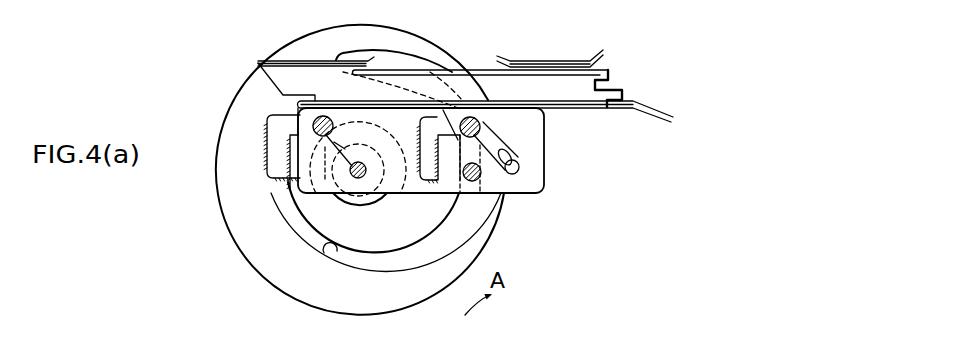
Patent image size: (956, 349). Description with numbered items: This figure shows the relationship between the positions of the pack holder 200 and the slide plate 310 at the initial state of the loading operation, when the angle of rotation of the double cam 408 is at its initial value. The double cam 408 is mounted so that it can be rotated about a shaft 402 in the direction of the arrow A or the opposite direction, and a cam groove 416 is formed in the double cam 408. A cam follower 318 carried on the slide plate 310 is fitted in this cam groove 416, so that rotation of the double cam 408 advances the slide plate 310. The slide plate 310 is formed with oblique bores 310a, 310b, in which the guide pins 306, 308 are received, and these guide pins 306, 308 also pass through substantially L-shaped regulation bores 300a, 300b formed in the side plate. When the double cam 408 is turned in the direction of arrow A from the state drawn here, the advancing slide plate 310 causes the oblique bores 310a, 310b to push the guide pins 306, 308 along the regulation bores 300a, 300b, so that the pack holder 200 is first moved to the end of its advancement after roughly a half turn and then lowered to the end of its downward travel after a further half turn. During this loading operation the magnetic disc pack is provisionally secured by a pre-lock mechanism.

The pack holder 200 is at (553, 61).
The guide pin 306 is at (302, 116).
The guide pin 308 is at (480, 126).
The slide plate 310 is at (543, 142).
The oblique bore 310a is at (333, 145).
The oblique bore 310b is at (520, 170).
The cam follower 318 is at (483, 177).
The regulation bore 300a is at (300, 173).
The regulation bore 300b is at (437, 181).
The shaft 402 is at (352, 175).
The double cam 408 is at (447, 61).
The cam groove 416 is at (323, 250).